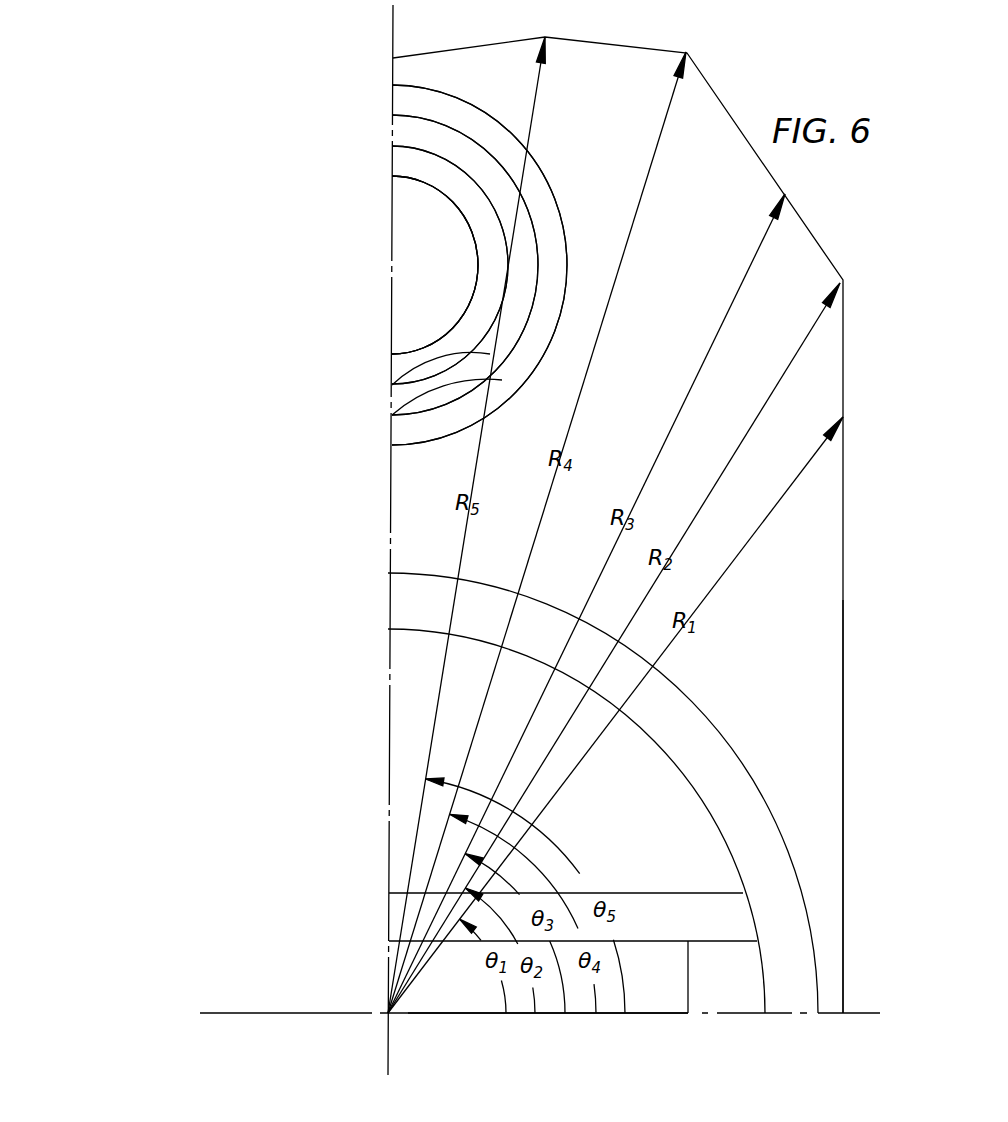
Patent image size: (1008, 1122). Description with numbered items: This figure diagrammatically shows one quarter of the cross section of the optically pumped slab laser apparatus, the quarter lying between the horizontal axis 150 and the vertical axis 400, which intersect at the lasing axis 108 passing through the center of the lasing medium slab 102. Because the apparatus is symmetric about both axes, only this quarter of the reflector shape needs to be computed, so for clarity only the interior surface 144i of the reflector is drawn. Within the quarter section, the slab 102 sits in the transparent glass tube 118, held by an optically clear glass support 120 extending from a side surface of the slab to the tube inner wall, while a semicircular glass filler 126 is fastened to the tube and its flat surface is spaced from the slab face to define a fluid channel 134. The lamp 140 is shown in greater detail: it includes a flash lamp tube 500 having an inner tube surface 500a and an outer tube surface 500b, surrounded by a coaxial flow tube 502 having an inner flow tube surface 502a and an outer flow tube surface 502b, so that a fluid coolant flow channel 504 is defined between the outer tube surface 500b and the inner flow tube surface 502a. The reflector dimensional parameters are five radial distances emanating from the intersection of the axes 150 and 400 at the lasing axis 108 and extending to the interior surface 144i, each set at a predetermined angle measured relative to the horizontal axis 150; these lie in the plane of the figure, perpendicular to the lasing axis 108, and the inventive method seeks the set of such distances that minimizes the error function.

The vertical axis 400 is at (393, 25).
The outer flow tube surface 502b is at (396, 82).
The flow tube 502 is at (415, 102).
The inner flow tube surface 502a is at (393, 118).
The outer tube surface 500b is at (393, 143).
The flash lamp tube 500 is at (407, 161).
The inner tube surface 500a is at (393, 180).
The lamp 140 is at (425, 270).
The fluid coolant flow channel 504 is at (403, 402).
The tube 118 is at (405, 601).
The filler 126 is at (405, 728).
The fluid channel 134 is at (398, 917).
The lasing axis 108 is at (387, 1015).
The lasing medium slab 102 is at (460, 1000).
The glass support 120 is at (736, 1000).
The horizontal axis 150 is at (870, 1015).
The interior surface 144i is at (722, 102).